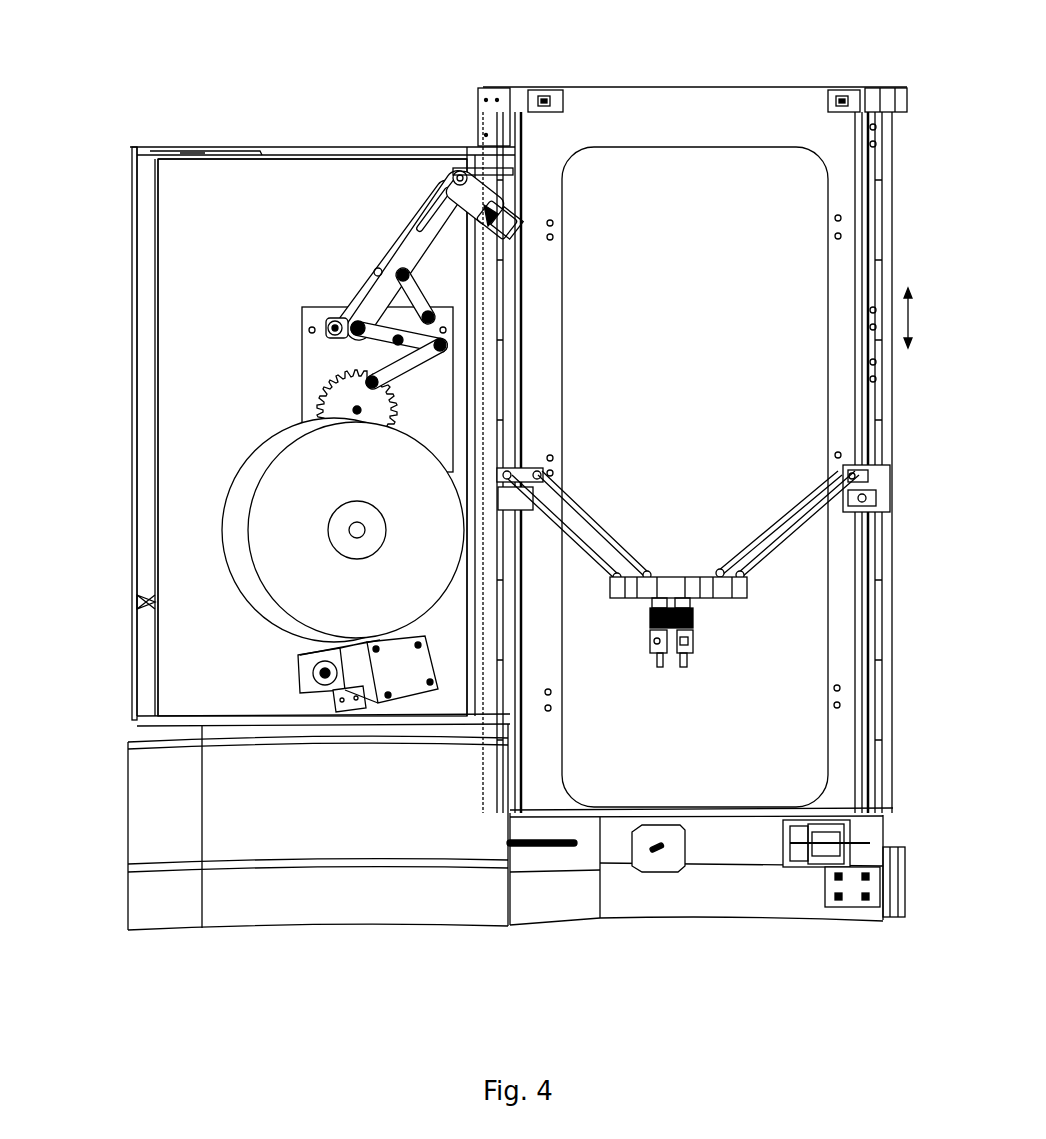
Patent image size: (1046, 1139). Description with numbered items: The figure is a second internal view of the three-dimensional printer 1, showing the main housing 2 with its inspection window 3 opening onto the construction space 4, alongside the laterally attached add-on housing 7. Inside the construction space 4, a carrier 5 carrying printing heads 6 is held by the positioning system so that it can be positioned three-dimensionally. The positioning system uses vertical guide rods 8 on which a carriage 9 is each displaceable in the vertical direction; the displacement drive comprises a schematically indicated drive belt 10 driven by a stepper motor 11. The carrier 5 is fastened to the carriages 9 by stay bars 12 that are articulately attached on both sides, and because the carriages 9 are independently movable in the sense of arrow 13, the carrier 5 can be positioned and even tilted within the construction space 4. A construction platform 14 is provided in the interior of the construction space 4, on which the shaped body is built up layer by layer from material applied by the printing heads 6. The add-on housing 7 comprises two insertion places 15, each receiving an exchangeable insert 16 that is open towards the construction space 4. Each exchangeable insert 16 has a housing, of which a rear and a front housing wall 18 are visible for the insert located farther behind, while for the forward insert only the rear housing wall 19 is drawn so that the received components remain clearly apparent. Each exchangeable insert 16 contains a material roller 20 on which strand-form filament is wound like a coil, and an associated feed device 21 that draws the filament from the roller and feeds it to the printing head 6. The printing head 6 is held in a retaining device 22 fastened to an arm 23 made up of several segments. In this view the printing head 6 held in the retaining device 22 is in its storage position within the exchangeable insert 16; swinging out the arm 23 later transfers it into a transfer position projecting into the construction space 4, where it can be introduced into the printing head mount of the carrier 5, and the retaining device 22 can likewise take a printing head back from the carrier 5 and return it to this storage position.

The 3D printer 1 is at (697, 57).
The main housing 2 is at (777, 87).
The inspection window 3 is at (718, 148).
The construction space 4 is at (773, 708).
The carrier 5 is at (740, 588).
The printing head 6 is at (502, 223).
The add-on housing 7 is at (347, 147).
The guide rod 8 is at (502, 298).
The carriage 9 is at (883, 482).
The drive belt 10 is at (527, 350).
The stepper motor 11 is at (658, 858).
The stay bars 12 is at (608, 532).
The arrow 13 is at (922, 318).
The construction platform 14 is at (700, 812).
The insertion place 15 is at (185, 328).
The exchangeable insert 16 is at (182, 516).
The housing wall 18 is at (146, 195).
The rear housing wall 19 is at (263, 178).
The material roller 20 is at (285, 483).
The feed device 21 is at (409, 680).
The retaining device 22 is at (468, 170).
The arm 23 is at (345, 245).